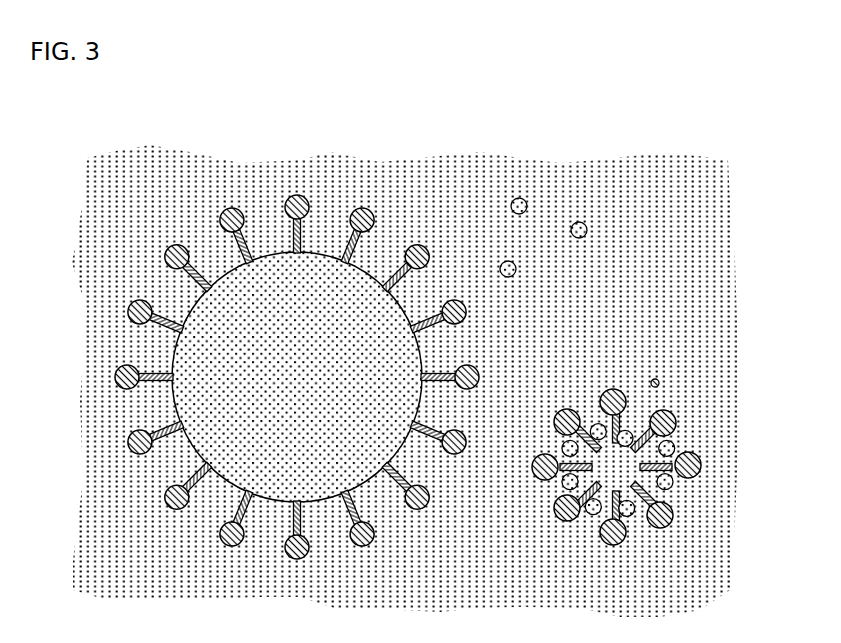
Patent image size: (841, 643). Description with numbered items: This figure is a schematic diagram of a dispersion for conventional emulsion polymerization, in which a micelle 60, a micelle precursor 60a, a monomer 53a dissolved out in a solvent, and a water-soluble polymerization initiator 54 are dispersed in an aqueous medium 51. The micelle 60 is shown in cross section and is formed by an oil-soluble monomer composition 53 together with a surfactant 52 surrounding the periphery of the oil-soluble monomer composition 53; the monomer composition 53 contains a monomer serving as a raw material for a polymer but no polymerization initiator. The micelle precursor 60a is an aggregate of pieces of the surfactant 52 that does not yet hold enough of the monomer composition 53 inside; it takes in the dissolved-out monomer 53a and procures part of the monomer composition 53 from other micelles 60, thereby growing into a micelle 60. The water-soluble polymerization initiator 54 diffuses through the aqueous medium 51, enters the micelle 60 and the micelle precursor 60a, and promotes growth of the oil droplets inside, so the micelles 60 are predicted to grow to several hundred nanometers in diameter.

The aqueous medium 51 is at (138, 178).
The surfactant 52 is at (222, 272).
The oil-soluble monomer composition 53 is at (270, 275).
The monomer dissolved out in a solvent 53a is at (519, 198).
The water-soluble polymerization initiator 54 is at (656, 379).
The micelle 60 is at (411, 326).
The micelle precursor 60a is at (688, 403).